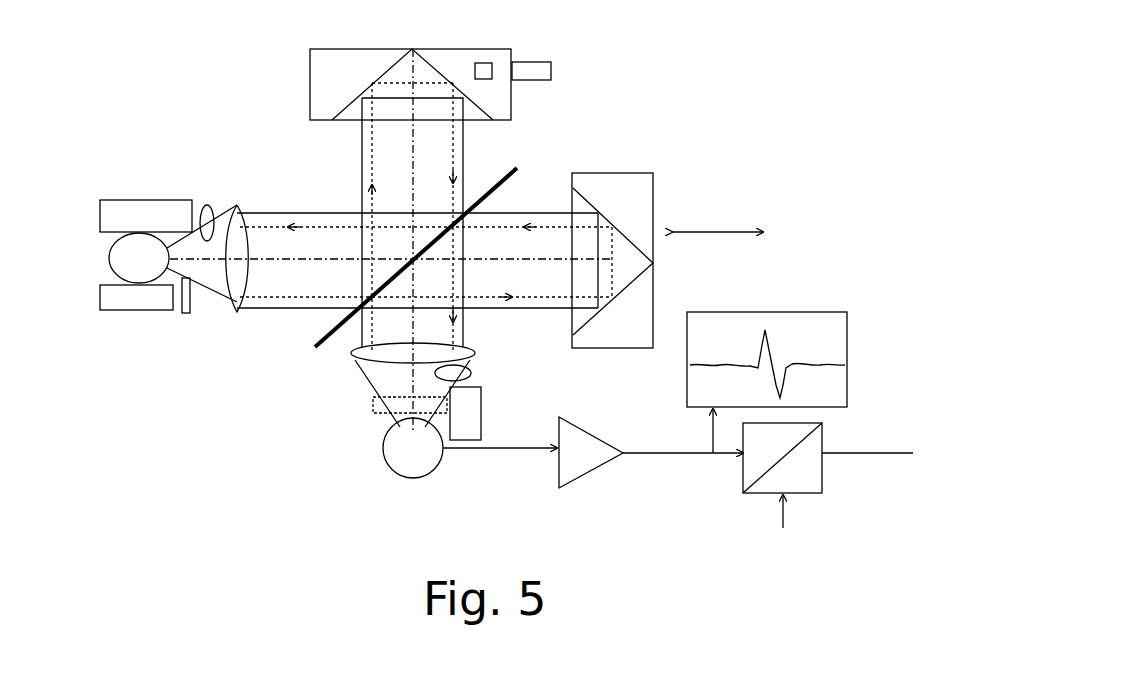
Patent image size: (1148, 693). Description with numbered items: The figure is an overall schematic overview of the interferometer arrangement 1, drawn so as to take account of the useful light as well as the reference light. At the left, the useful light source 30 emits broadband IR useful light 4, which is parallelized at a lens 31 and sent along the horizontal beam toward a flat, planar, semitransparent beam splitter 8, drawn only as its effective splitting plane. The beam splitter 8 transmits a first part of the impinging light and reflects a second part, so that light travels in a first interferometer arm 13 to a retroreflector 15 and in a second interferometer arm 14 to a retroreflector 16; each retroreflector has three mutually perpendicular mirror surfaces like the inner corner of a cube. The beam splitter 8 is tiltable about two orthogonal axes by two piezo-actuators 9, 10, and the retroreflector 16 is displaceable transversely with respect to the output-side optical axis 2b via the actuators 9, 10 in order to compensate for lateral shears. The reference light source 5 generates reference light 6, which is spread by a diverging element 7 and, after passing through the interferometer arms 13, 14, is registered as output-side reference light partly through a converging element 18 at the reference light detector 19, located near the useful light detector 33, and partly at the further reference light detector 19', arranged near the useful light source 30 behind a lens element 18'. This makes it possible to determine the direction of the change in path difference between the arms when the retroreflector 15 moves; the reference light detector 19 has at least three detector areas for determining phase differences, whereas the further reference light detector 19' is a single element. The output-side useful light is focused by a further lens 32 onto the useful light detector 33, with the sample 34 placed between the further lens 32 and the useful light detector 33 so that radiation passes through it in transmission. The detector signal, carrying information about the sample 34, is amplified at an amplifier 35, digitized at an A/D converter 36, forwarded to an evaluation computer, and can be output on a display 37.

The interferometer arrangement 1 is at (176, 70).
The output-side optical axis 2b is at (412, 322).
The useful light 4 is at (322, 213).
The reference light source 5 is at (150, 302).
The reference light 6 is at (196, 300).
The diverging element 7 is at (188, 313).
The beam splitter 8 is at (318, 345).
The actuator 9 is at (532, 70).
The actuator 10 is at (484, 70).
The first interferometer arm 13 is at (544, 210).
The second interferometer arm 14 is at (478, 135).
The retroreflector 15 is at (627, 193).
The retroreflector 16 is at (332, 80).
The converging element 18 is at (482, 362).
The lens element 18' is at (217, 192).
The reference light detector 19 is at (490, 404).
The further reference light detector 19' is at (146, 183).
The useful light source 30 is at (112, 272).
The lens 31 is at (240, 208).
The further lens 32 is at (355, 360).
The useful light detector 33 is at (395, 455).
The sample 34 is at (373, 405).
The amplifier 35 is at (595, 460).
The A/D converter 36 is at (822, 480).
The display 37 is at (800, 312).